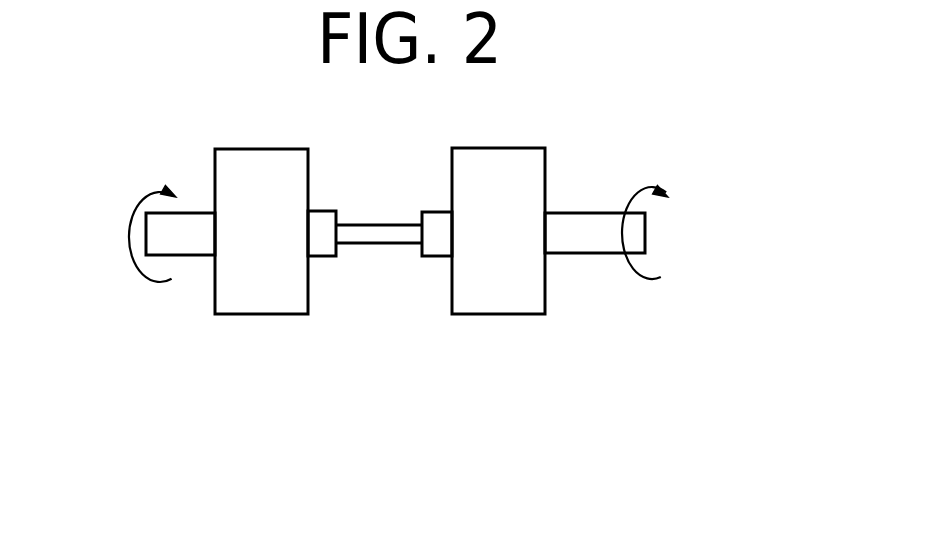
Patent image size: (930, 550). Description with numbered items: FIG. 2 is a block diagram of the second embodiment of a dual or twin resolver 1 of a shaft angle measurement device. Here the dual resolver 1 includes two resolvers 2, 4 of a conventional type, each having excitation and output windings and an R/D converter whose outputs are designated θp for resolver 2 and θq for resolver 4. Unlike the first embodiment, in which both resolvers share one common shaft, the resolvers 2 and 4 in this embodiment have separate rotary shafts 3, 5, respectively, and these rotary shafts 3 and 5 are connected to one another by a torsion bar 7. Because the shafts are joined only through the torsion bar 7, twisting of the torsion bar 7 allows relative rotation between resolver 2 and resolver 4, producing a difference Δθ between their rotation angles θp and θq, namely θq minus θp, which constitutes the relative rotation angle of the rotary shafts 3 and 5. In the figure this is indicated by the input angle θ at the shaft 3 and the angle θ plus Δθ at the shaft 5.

The dual resolver 1 is at (629, 159).
The resolver 2 is at (263, 315).
The rotary shaft 3 is at (183, 257).
The resolver 4 is at (500, 314).
The rotary shaft 5 is at (603, 254).
The torsion bar 7 is at (380, 243).